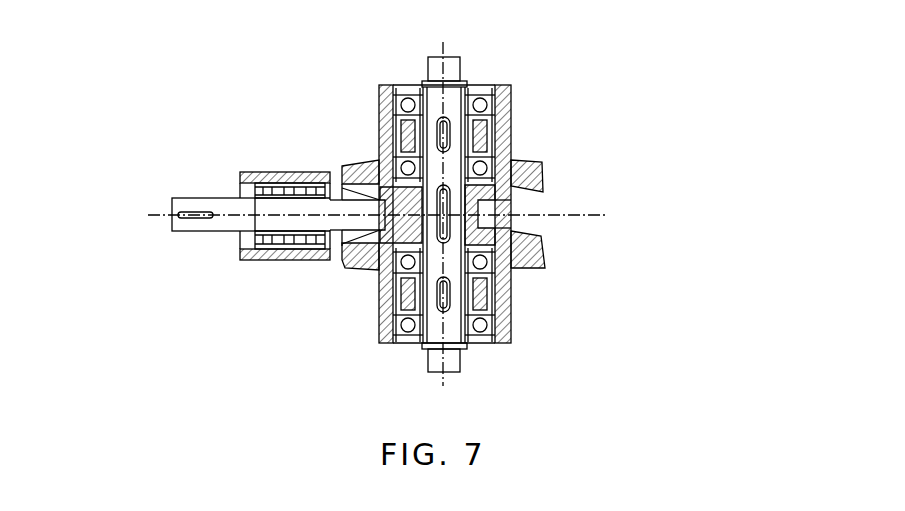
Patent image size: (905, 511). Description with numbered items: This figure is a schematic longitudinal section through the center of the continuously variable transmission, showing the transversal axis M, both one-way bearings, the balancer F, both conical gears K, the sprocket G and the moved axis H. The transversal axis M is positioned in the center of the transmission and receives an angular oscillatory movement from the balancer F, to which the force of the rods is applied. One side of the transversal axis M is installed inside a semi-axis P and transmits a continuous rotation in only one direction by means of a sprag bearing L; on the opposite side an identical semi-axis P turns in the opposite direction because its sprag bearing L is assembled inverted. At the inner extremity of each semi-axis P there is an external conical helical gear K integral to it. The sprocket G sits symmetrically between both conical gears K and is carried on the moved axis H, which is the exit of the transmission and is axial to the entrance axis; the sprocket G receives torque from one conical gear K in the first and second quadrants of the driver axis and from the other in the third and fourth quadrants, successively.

The transversal axis M is at (300, 186).
The semi-axis P is at (300, 196).
The sprag bearing L is at (633, 91).
The moved axis H is at (182, 194).
The balancer F is at (629, 195).
The sprocket G is at (307, 269).
The conical gear K is at (666, 296).